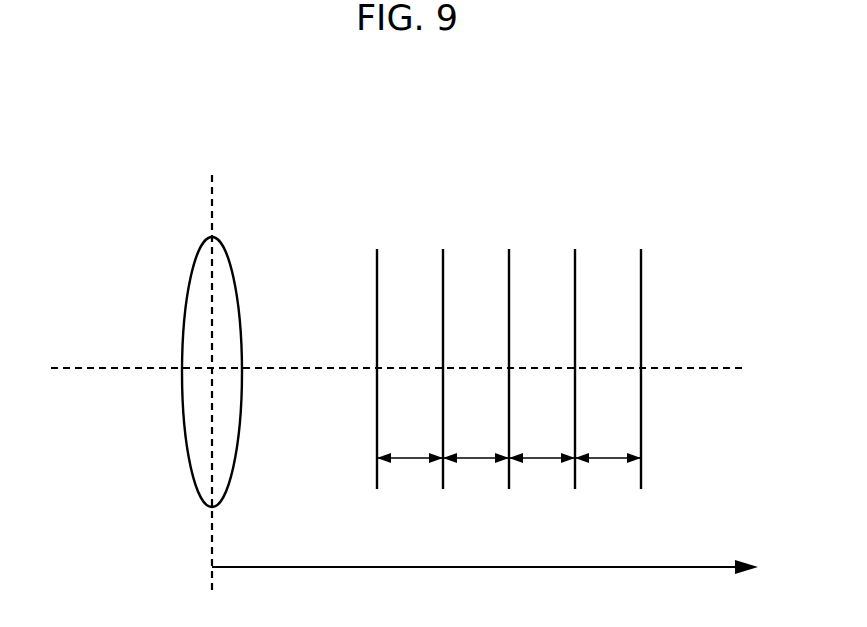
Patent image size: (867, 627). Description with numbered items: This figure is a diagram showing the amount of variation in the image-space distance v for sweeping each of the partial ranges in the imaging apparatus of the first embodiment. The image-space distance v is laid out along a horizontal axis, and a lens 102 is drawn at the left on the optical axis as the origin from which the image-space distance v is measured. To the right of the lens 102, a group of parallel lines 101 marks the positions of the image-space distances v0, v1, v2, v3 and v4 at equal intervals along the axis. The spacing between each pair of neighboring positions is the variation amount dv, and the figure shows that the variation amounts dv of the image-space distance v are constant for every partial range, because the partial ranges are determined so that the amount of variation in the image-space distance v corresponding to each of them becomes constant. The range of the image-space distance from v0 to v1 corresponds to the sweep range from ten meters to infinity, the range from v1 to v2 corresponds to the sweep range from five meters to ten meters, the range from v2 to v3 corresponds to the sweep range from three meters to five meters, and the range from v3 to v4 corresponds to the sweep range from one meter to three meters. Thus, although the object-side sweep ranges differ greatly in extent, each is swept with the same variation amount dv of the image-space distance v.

The sampling positions / sample lines 101 is at (509, 302).
The lens 102 is at (225, 247).
The image-space distance v0 is at (377, 354).
The image-space distance v1 is at (443, 354).
The image-space distance v2 is at (509, 354).
The image-space distance v3 is at (575, 354).
The image-space distance v4 is at (641, 354).
The variation amount of the image-space distance dv is at (509, 441).
The image-space distance v is at (498, 567).